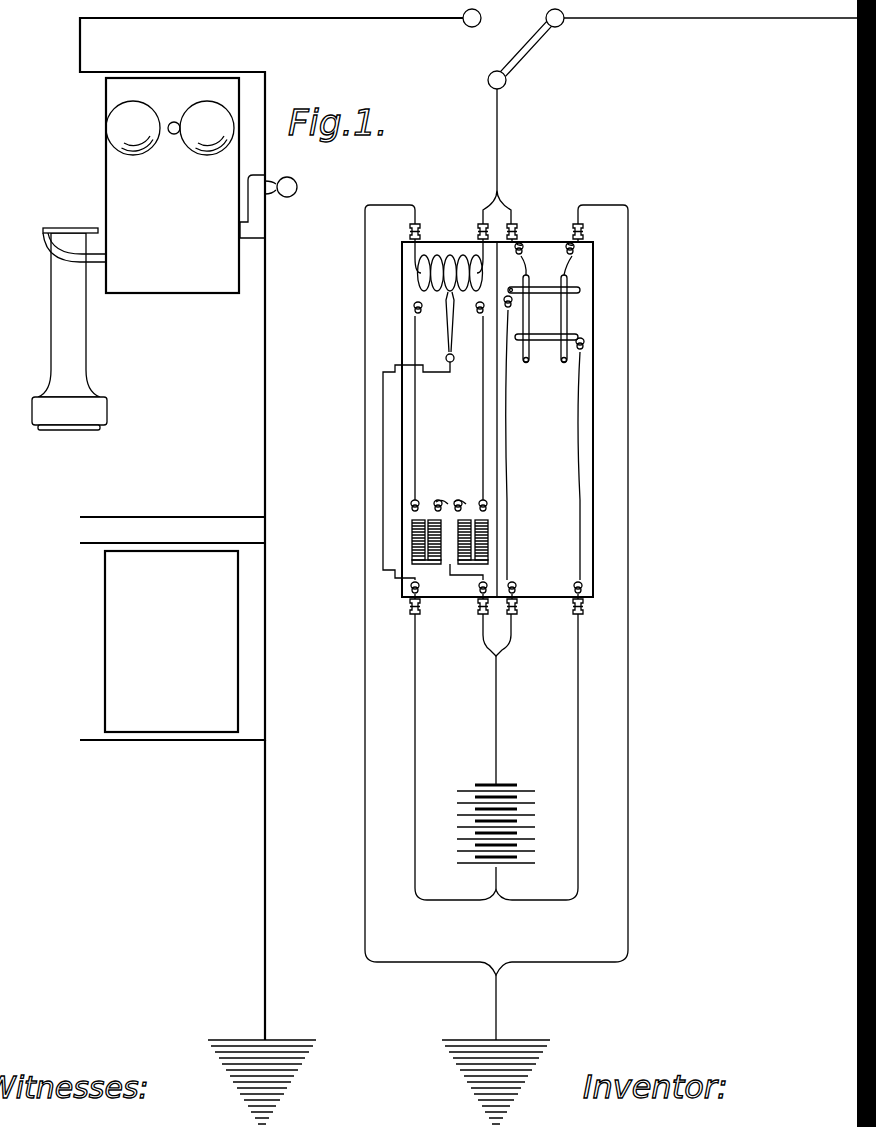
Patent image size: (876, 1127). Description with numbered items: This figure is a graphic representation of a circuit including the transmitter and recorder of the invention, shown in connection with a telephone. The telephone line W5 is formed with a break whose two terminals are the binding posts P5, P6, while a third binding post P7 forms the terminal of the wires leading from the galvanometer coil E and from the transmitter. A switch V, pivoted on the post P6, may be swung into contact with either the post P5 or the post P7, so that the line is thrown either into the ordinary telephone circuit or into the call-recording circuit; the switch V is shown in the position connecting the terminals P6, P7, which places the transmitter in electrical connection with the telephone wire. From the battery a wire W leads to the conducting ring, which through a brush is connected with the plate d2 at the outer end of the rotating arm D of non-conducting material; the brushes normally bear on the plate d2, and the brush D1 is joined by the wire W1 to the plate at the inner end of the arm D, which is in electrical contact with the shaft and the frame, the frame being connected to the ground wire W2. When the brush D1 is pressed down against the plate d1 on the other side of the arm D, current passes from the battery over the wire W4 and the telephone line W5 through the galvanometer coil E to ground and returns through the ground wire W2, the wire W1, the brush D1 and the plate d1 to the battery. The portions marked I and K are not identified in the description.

The binding post P5 is at (469, 26).
The binding post P6 is at (552, 30).
The binding post P7 is at (490, 89).
The switch V is at (520, 55).
The telephone line W5 is at (566, 30).
The wire W4 is at (524, 242).
The galvanometer coil E is at (443, 256).
The induction apparatus I is at (428, 443).
The relay compartment K is at (520, 450).
The wire W1 is at (508, 540).
The brush D1 is at (526, 365).
The rotating arm D is at (564, 365).
The plate d1 is at (578, 337).
The plate d2 is at (582, 290).
The wire W is at (577, 726).
The ground wire W2 is at (628, 918).